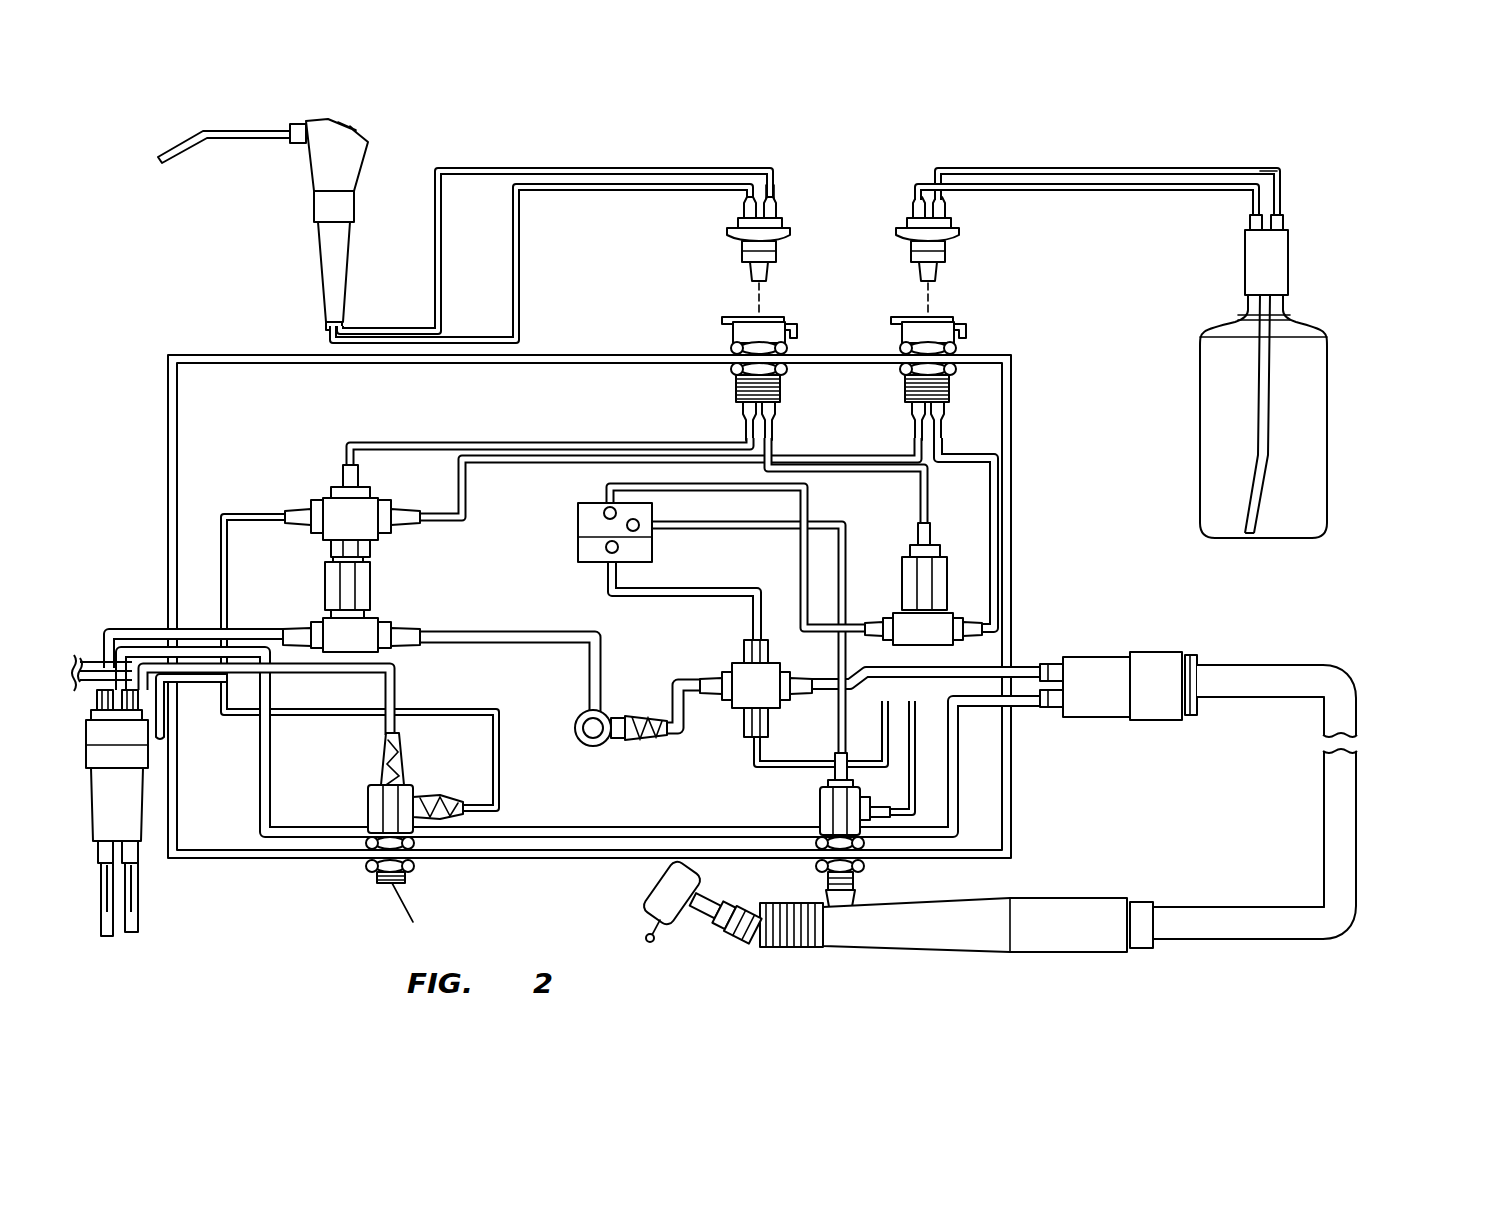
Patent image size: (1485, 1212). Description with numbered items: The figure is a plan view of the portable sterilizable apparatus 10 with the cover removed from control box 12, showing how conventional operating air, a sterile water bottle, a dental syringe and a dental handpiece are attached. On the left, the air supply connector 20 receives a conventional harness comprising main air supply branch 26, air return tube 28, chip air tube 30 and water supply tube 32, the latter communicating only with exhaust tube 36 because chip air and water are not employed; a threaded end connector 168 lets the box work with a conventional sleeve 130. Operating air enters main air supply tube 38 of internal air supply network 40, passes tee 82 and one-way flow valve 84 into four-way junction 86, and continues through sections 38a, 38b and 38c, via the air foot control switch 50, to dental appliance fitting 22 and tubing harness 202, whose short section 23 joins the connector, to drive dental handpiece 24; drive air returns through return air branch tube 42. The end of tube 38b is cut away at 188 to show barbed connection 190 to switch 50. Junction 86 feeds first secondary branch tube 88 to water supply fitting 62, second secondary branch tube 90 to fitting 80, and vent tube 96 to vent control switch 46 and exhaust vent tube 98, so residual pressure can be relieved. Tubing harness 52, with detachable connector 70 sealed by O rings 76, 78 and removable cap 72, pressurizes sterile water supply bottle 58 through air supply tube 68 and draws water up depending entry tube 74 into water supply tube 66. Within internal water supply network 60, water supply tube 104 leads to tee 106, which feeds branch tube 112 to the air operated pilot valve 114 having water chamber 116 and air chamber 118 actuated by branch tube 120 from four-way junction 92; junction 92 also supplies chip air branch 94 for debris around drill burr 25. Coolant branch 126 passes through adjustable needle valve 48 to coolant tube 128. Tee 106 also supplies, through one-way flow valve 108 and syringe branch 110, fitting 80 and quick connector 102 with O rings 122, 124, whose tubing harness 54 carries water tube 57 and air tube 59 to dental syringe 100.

The portable sterilizable apparatus 10 is at (1351, 186).
The control box 12 is at (165, 410).
The air supply connector 20 is at (148, 781).
The dental appliance fitting 22 is at (1157, 650).
The harness section location 23 is at (1027, 660).
The dental handpiece 24 is at (650, 879).
The drill burr 25 is at (658, 940).
The main air supply branch 26 is at (108, 940).
The air return tube 28 is at (142, 930).
The chip air tube 30 is at (113, 878).
The water supply tube 32 is at (138, 905).
The exhaust tube 36 is at (94, 658).
The main air supply tube 38 is at (140, 628).
The main air tube section 38a is at (505, 632).
The main air tube section 38b is at (668, 680).
The main air tube section 38c is at (950, 666).
The internal air supply network 40 is at (203, 627).
The return air branch tube 42 is at (168, 676).
The vent control switch 46 is at (378, 884).
The adjustable needle valve 48 is at (858, 878).
The air foot control switch 50 is at (582, 746).
The tubing harness 52 is at (1274, 169).
The tubing harness 54 is at (612, 167).
The water tube 57 is at (774, 171).
The sterile water supply bottle 58 is at (1328, 420).
The air tube 59 is at (520, 292).
The internal water supply network 60 is at (988, 454).
The water supply fitting 62 is at (956, 318).
The water supply tube 66 is at (1100, 170).
The air supply tube 68 is at (1128, 192).
The detachable connector 70 is at (951, 224).
The removable cap 72 is at (1290, 266).
The depending entry tube 74 is at (1258, 503).
The O ring 76 is at (947, 262).
The O ring 78 is at (935, 281).
The fitting 80 is at (768, 316).
The tee 82 is at (322, 620).
The one-way flow valve 84 is at (372, 586).
The four-way junction 86 is at (336, 532).
The first secondary branch tube 88 is at (449, 512).
The second secondary branch tube 90 is at (425, 442).
The four-way junction 92 is at (728, 666).
The chip air branch 94 is at (752, 764).
The vent tube 96 is at (246, 512).
The exhaust vent tube 98 is at (380, 736).
The dental syringe 100 is at (306, 176).
The quick connector 102 is at (782, 215).
The water supply tube 104 is at (988, 504).
The tee 106 is at (904, 642).
The one-way flow valve 108 is at (903, 582).
The syringe branch 110 is at (900, 474).
The branch tube 112 is at (810, 490).
The air operated pilot valve 114 is at (585, 503).
The water chamber 116 is at (578, 518).
The air chamber 118 is at (578, 550).
The branch tube 120 is at (718, 588).
The O ring 122 is at (778, 262).
The O ring 124 is at (766, 281).
The coolant branch 126 is at (748, 522).
The coolant tube 128 is at (920, 772).
The sleeve 130 is at (150, 746).
The threaded end connector 168 is at (166, 716).
The cut-away end 188 is at (666, 742).
The barbed connection 190 is at (640, 716).
The tubing harness 202 is at (1303, 664).